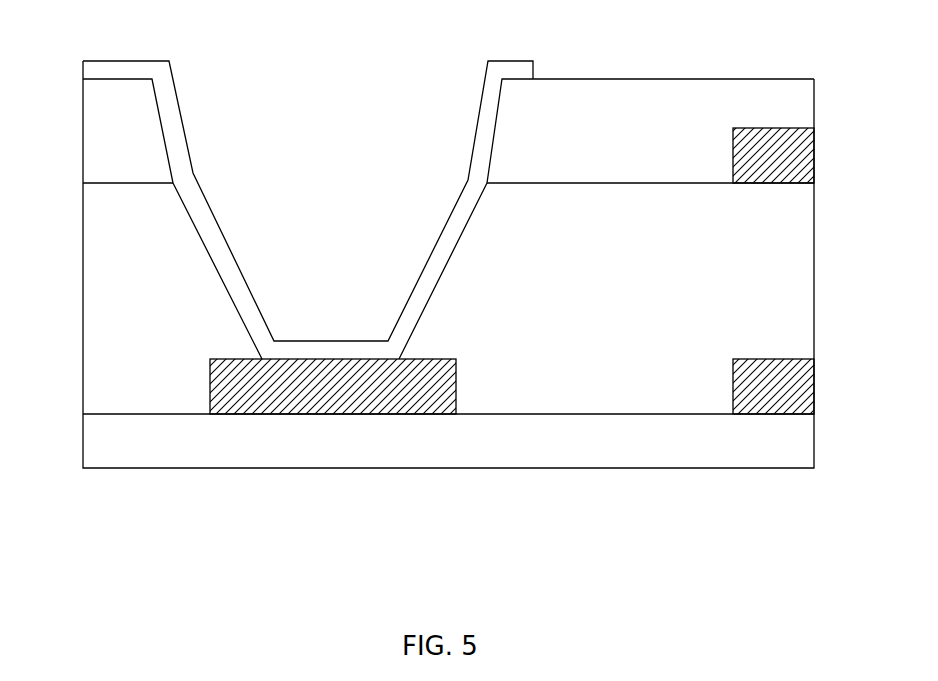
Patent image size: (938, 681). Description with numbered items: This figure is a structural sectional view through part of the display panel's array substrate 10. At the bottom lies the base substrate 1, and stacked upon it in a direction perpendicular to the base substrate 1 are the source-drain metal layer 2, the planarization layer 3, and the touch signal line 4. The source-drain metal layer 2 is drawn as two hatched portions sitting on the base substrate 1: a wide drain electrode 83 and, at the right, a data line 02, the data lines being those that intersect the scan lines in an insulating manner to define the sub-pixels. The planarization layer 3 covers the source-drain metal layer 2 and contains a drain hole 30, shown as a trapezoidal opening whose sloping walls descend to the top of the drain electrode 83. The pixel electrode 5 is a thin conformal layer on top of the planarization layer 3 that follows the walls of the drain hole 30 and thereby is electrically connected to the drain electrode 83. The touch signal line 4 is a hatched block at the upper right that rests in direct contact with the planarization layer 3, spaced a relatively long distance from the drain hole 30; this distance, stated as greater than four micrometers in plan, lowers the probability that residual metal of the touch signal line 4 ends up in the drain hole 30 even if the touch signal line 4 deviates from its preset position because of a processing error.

The base substrate 1 is at (798, 448).
The source-drain metal layer 2 is at (512, 484).
The planarization layer 3 is at (800, 260).
The touch signal line 4 is at (795, 158).
The pixel electrode 5 is at (521, 68).
The array substrate 10 is at (73, 61).
The drain hole 30 is at (213, 273).
The drain electrode 83 is at (385, 390).
The data line 02 is at (797, 393).